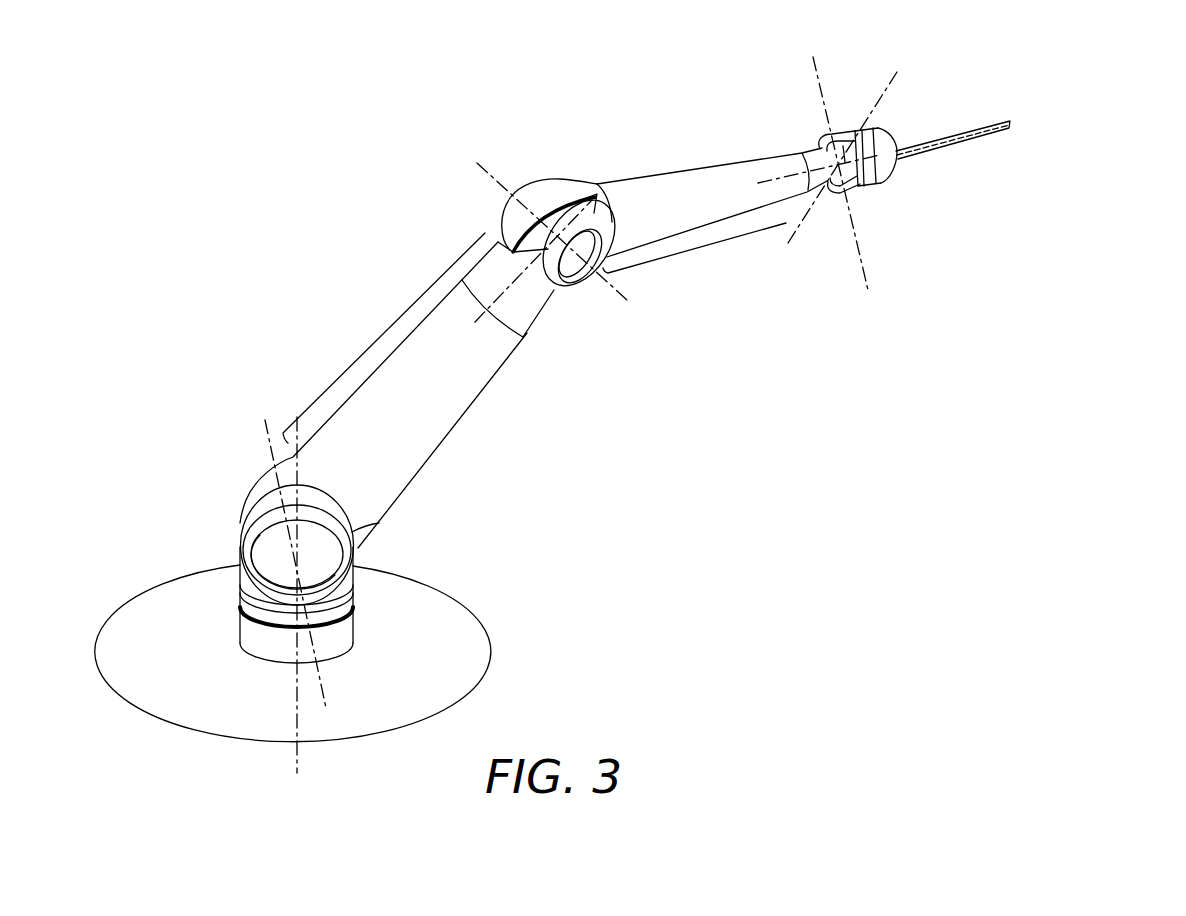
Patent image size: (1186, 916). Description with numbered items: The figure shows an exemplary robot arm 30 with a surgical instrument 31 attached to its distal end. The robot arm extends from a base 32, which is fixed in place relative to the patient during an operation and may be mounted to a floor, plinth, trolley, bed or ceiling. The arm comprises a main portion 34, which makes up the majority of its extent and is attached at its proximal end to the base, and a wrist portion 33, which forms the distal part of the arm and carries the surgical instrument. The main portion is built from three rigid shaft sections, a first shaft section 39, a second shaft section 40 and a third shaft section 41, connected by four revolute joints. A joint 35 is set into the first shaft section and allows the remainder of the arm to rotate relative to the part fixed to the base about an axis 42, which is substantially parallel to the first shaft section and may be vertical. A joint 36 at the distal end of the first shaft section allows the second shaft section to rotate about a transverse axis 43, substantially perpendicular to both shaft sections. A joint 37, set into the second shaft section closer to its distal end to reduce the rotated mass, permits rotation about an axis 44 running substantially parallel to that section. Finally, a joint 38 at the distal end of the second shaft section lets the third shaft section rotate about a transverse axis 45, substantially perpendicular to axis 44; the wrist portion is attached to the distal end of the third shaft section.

The robot arm 30 is at (490, 460).
The surgical instrument 31 is at (977, 123).
The base 32 is at (455, 610).
The wrist portion 33 is at (860, 75).
The main portion 34 is at (416, 252).
The joint 35 is at (353, 612).
The joint 36 is at (267, 547).
The joint 37 is at (523, 337).
The joint 38 is at (542, 190).
The first shaft section 39 is at (232, 595).
The second shaft section 40 is at (392, 336).
The third shaft section 41 is at (717, 238).
The axis 42 is at (297, 760).
The axis 43 is at (326, 687).
The axis 44 is at (603, 177).
The axis 45 is at (485, 168).